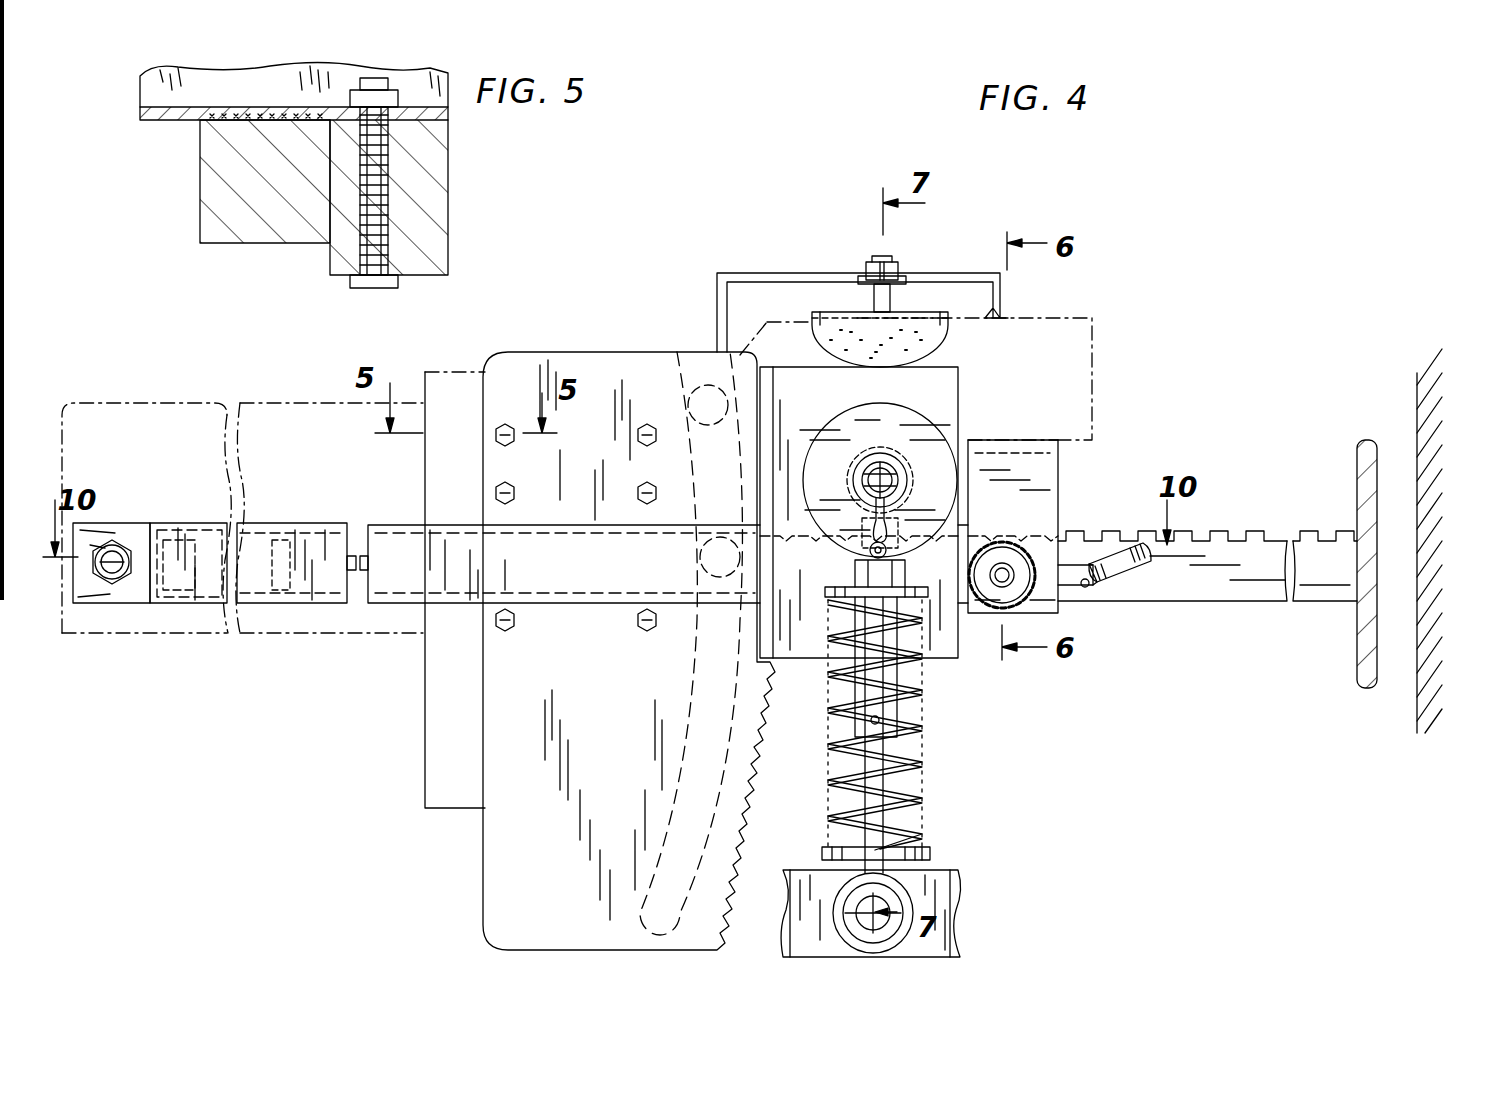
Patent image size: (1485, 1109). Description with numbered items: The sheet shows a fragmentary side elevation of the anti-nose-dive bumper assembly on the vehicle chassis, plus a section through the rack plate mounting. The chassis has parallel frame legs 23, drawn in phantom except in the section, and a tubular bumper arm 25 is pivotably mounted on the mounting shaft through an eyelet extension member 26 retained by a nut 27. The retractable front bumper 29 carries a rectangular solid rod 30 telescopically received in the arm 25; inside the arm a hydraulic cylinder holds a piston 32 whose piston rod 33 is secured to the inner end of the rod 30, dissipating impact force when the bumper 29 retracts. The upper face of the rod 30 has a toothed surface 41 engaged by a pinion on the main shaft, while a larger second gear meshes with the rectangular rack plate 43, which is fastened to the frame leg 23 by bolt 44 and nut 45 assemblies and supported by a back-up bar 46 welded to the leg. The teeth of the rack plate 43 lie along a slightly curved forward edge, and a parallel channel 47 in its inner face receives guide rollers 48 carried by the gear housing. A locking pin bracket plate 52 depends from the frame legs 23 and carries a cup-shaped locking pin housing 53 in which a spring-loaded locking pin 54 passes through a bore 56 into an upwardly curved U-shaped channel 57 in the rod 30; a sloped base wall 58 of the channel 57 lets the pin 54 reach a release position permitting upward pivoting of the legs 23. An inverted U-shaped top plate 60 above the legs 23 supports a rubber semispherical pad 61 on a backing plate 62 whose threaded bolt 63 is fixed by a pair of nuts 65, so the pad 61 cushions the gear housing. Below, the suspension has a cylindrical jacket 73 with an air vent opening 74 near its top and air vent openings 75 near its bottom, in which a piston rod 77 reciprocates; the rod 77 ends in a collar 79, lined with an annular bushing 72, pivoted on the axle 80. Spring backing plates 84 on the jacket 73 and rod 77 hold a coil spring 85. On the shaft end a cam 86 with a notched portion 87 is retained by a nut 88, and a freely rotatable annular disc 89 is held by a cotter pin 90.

In FIG. 5, the frame legs 23 is at (162, 117).
In FIG. 4, the frame legs 23 is at (297, 403).
In FIG. 4, the bumper arms 25 is at (190, 603).
In FIG. 4, the eyelet extension member 26 is at (128, 530).
In FIG. 4, the nut 27 is at (112, 580).
In FIG. 4, the front bumper 29 is at (1357, 644).
In FIG. 4, the rods 30 is at (548, 580).
In FIG. 4, the piston 32 is at (291, 563).
In FIG. 4, the piston rod 33 is at (358, 572).
In FIG. 4, the toothed surface 41 is at (1256, 535).
In FIG. 5, the rack plates 43 is at (440, 220).
In FIG. 4, the rack plates 43 is at (650, 362).
In FIG. 5, the bolt 44 is at (398, 284).
In FIG. 4, the bolt 44 is at (514, 436).
In FIG. 5, the nut 45 is at (400, 90).
In FIG. 5, the back-up bar 46 is at (258, 245).
In FIG. 4, the back-up bar 46 is at (457, 371).
In FIG. 4, the channel 47 is at (690, 690).
In FIG. 4, the guide rollers 48 is at (690, 405).
In FIG. 4, the locking pin bracket plate 52 is at (1060, 477).
In FIG. 4, the locking pin housing 53 is at (998, 563).
In FIG. 4, the locking pin 54 is at (1015, 555).
In FIG. 4, the bore 56 is at (995, 610).
In FIG. 4, the channel 57 is at (1087, 588).
In FIG. 4, the sloped base wall 58 is at (1130, 570).
In FIG. 4, the top plate 60 is at (773, 282).
In FIG. 4, the rubber semispherical pad 61 is at (945, 345).
In FIG. 4, the backing plate 62 is at (812, 314).
In FIG. 4, the threaded bolt 63 is at (874, 296).
In FIG. 4, the nuts 65 is at (898, 270).
In FIG. 4, the bushing 72 is at (835, 932).
In FIG. 4, the jacket 73 is at (915, 672).
In FIG. 4, the air vent opening 74 is at (905, 578).
In FIG. 4, the air vent openings 75 is at (897, 714).
In FIG. 4, the piston rod 77 is at (883, 816).
In FIG. 4, the collar 79 is at (833, 880).
In FIG. 4, the axle 80 is at (890, 900).
In FIG. 4, the spring backing plate 84 is at (840, 587).
In FIG. 4, the coil spring 85 is at (922, 770).
In FIG. 4, the cam 86 is at (832, 428).
In FIG. 4, the notched portion 87 is at (868, 540).
In FIG. 4, the nut 88 is at (856, 468).
In FIG. 4, the annular disc 89 is at (888, 462).
In FIG. 4, the cotter pin 90 is at (905, 496).